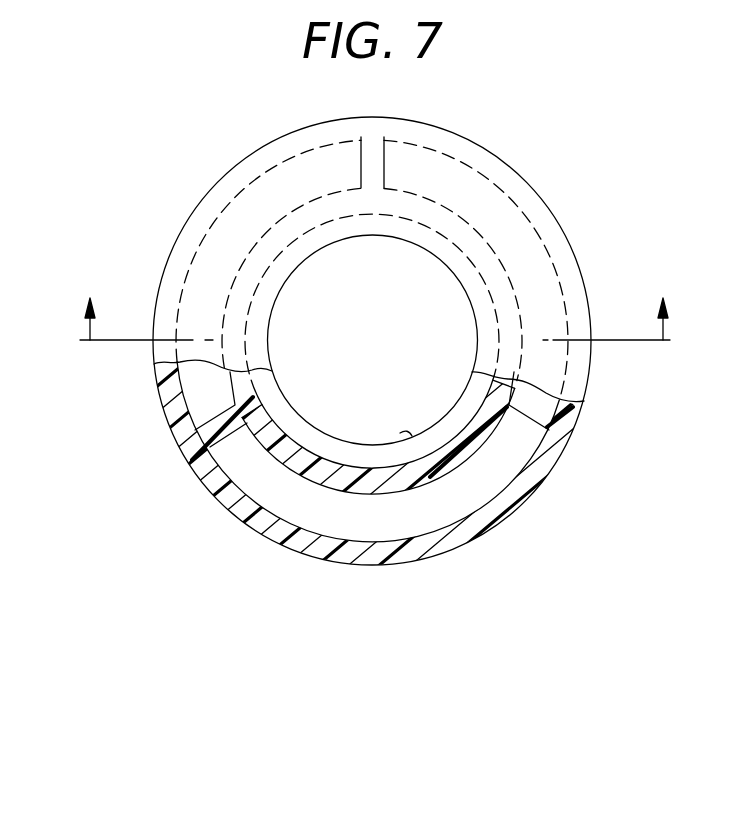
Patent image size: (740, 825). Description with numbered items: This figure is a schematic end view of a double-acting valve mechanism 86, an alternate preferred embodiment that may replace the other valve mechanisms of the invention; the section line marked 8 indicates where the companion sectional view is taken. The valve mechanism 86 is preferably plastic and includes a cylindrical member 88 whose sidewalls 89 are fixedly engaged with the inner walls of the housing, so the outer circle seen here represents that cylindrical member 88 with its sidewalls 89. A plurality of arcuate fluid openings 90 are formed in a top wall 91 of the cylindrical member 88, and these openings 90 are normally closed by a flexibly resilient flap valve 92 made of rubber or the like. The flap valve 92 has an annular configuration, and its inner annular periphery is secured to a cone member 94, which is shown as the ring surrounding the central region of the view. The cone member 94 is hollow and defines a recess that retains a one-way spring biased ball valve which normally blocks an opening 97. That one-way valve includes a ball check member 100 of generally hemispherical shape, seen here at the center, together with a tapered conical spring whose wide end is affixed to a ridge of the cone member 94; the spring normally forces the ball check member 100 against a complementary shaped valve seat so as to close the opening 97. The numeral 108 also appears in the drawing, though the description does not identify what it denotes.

The double-acting valve mechanism 86 is at (105, 520).
The cylindrical member 88 is at (273, 543).
The sidewalls 89 is at (581, 267).
The arcuate fluid openings 90 is at (193, 380).
The top wall 91 is at (200, 470).
The flap valve 92 is at (578, 384).
The cone member 94 is at (281, 408).
The opening 97 is at (456, 279).
The ball check member 100 is at (397, 316).
The bore surface 108 is at (400, 433).
The section line 8- 8 is at (375, 299).